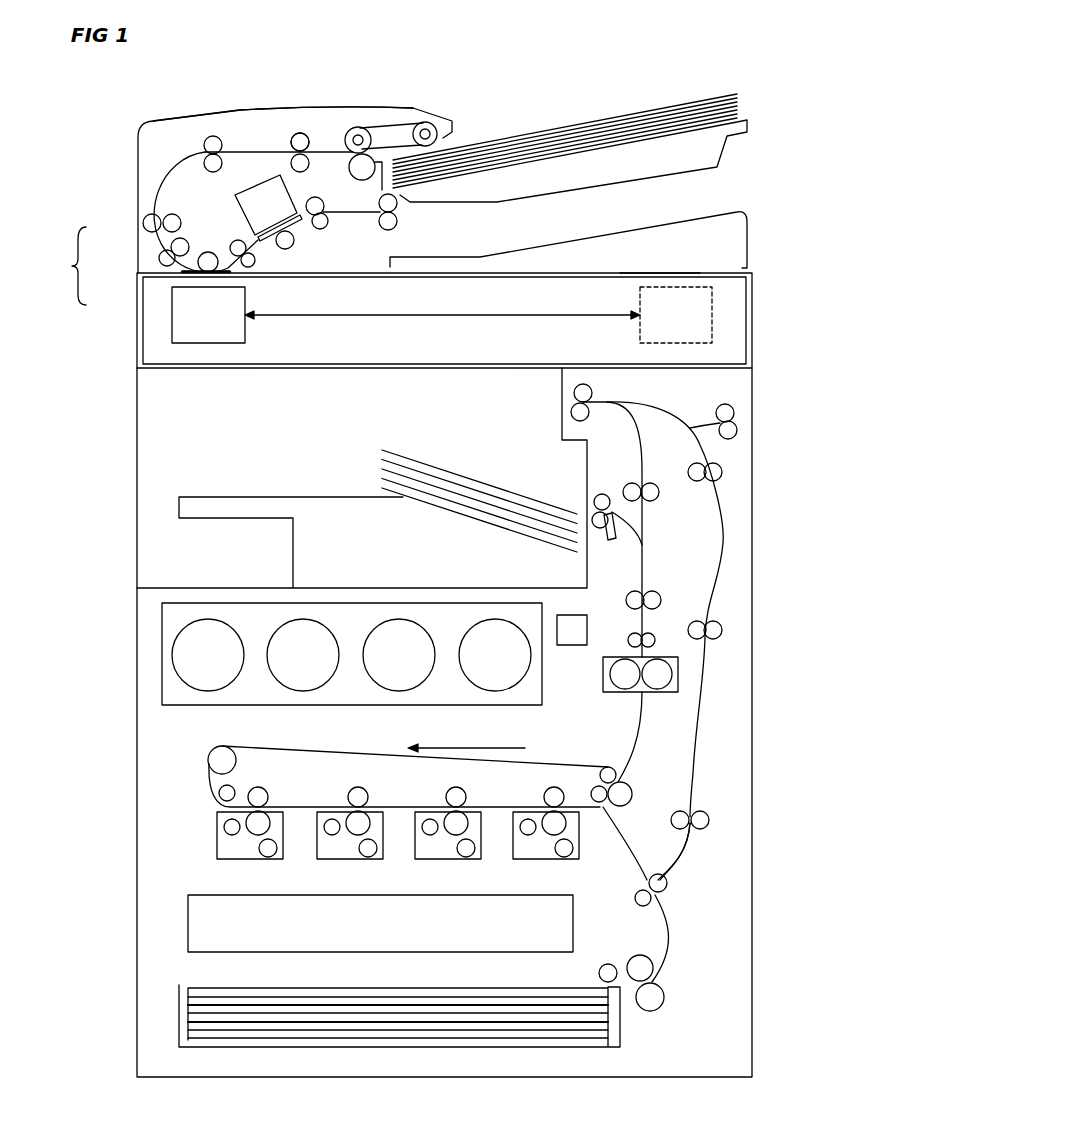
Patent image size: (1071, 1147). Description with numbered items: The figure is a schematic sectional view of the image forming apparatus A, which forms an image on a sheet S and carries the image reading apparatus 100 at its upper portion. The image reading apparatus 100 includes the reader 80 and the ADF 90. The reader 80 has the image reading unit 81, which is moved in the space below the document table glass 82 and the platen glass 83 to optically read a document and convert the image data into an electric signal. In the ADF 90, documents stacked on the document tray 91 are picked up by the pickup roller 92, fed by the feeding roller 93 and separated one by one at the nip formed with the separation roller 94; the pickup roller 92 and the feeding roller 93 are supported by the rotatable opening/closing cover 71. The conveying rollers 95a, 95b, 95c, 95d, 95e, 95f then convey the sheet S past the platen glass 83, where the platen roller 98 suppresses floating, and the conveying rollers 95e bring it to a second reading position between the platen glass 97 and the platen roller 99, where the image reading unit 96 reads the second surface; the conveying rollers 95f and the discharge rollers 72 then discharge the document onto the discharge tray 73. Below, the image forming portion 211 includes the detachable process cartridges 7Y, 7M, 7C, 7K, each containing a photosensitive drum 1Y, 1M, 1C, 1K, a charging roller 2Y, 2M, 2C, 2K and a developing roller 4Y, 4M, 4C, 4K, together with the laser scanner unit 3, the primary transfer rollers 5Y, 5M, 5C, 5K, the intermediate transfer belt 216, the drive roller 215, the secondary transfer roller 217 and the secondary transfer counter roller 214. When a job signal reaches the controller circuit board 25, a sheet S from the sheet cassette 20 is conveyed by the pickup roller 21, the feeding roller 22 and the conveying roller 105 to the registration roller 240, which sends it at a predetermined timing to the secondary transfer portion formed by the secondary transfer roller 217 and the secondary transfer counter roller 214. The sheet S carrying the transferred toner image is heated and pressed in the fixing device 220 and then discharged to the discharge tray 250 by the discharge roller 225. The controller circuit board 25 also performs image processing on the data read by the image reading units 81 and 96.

The image forming apparatus A is at (706, 70).
The sheet S is at (592, 125).
The image reading apparatus 100 is at (59, 266).
The ADF 90 is at (137, 237).
The reader 80 is at (137, 290).
The image reading unit 81 is at (246, 333).
The document table glass 82 is at (640, 273).
The platen glass 83 is at (193, 273).
The platen roller 98 is at (208, 272).
The opening/closing cover 71 is at (228, 108).
The discharge rollers 72 is at (398, 222).
The discharge tray 73 is at (537, 247).
The document tray 91 is at (632, 170).
The pickup roller 92 is at (432, 124).
The feeding roller 93 is at (360, 127).
The separation roller 94 is at (356, 176).
The conveying roller 95a is at (303, 133).
The conveying roller 95b is at (212, 136).
The conveying roller 95c is at (146, 218).
The conveying roller 95d is at (184, 243).
The conveying rollers 95e is at (252, 265).
The conveying rollers 95f is at (327, 222).
The image reading unit 96 is at (296, 133).
The platen glass 97 is at (297, 224).
The platen roller 99 is at (290, 248).
The discharge tray 250 is at (470, 517).
The discharge roller 225 is at (595, 502).
The image forming portion 211 is at (519, 754).
The controller circuit board 25 is at (573, 647).
The fixing device 220 is at (678, 672).
The secondary transfer roller 217 is at (650, 800).
The registration roller 240 is at (670, 853).
The conveying roller 105 is at (666, 884).
The feeding roller 22 is at (648, 967).
The pickup roller 21 is at (608, 963).
The sheet cassette 20 is at (180, 1022).
The laser scanner unit 3 is at (197, 928).
The drive roller 215 is at (210, 757).
The intermediate transfer belt 216 is at (594, 770).
The secondary transfer counter roller 214 is at (615, 781).
The photosensitive drum 1Y is at (266, 814).
The photosensitive drum 1M is at (367, 815).
The photosensitive drum 1C is at (465, 815).
The photosensitive drum 1K is at (564, 815).
The charging roller 2Y is at (272, 854).
The charging roller 2M is at (370, 854).
The charging roller 2C is at (472, 855).
The charging roller 2K is at (575, 853).
The developing roller 4Y is at (233, 833).
The developing roller 4M is at (334, 833).
The developing roller 4C is at (432, 833).
The developing roller 4K is at (531, 833).
The primary transfer roller 5Y is at (260, 788).
The primary transfer roller 5M is at (359, 788).
The primary transfer roller 5C is at (452, 790).
The primary transfer roller 5K is at (555, 786).
The process cartridge 7Y is at (217, 836).
The process cartridge 7M is at (322, 860).
The process cartridge 7C is at (425, 860).
The process cartridge 7K is at (530, 860).